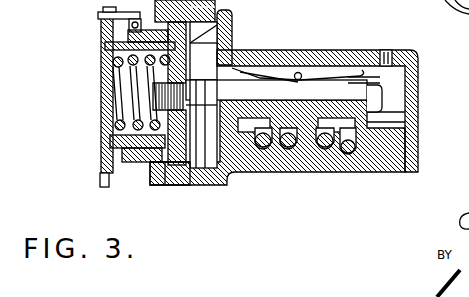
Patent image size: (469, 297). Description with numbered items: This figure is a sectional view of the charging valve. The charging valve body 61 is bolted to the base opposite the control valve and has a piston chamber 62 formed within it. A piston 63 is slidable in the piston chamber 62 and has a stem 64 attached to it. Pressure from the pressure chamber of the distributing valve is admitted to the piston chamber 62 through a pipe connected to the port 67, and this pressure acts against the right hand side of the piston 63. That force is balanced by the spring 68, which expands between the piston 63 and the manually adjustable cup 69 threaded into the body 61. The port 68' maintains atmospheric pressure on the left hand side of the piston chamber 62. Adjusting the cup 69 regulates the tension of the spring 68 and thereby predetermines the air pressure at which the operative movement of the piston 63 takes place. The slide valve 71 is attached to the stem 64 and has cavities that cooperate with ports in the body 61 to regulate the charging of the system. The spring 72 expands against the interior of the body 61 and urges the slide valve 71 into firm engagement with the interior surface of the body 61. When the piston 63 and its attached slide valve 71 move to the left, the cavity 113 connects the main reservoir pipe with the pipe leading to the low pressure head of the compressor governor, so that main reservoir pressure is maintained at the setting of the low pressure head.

The charging valve body 61 is at (298, 50).
The piston chamber 62 is at (182, 183).
The piston 63 is at (229, 22).
The stem 64 is at (203, 168).
The port 67 is at (386, 53).
The spring 68 is at (123, 89).
The port 68' is at (139, 174).
The manually adjustable cup 69 is at (101, 165).
The slide valve 71 is at (303, 132).
The spring 72 is at (336, 68).
The cavity 113 is at (397, 122).